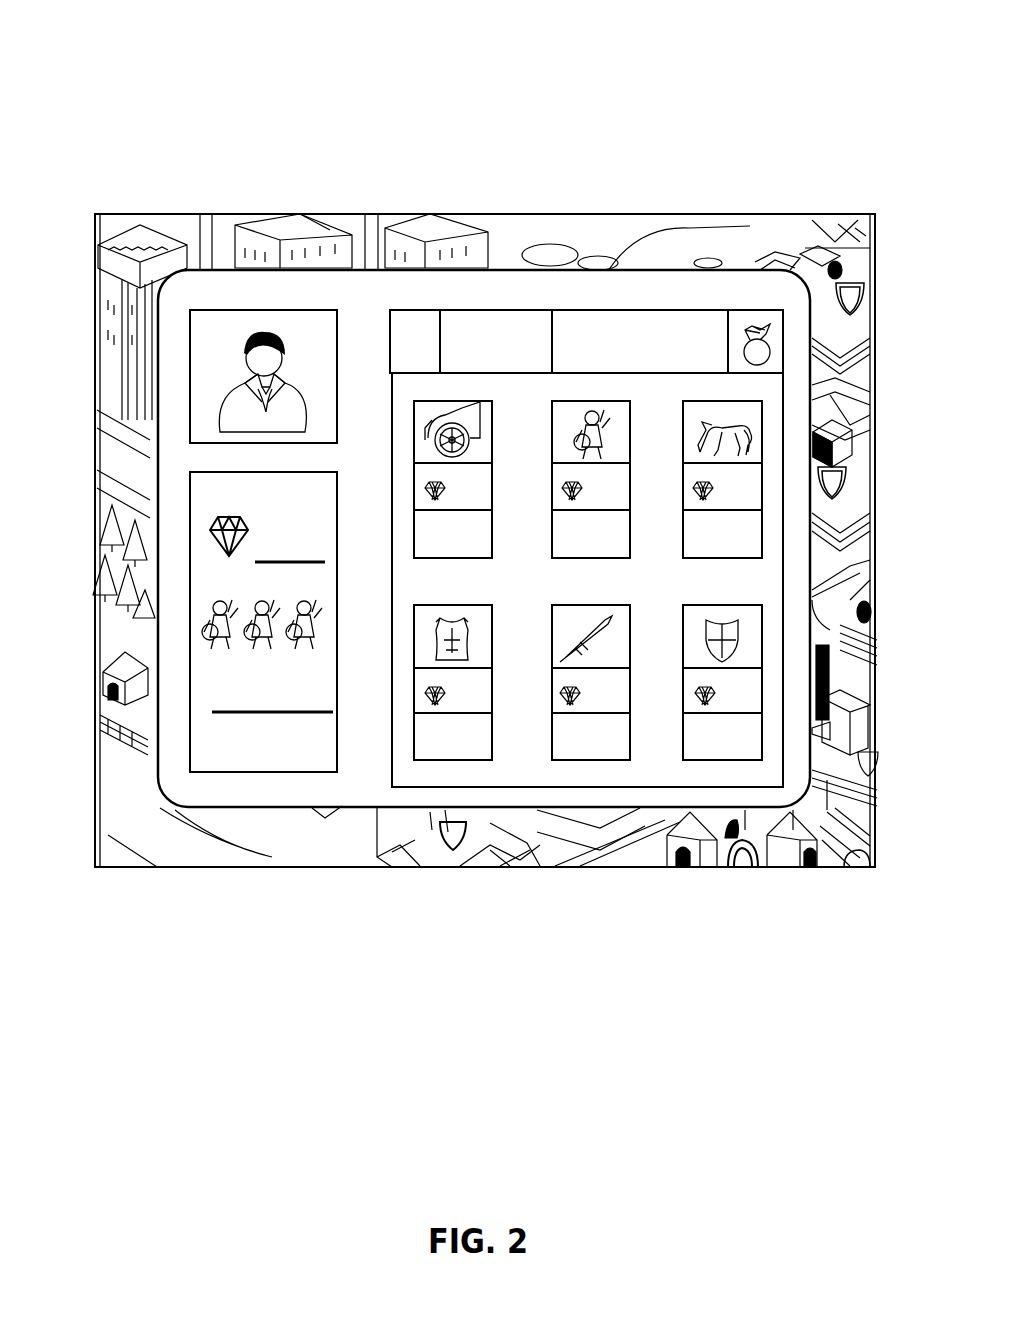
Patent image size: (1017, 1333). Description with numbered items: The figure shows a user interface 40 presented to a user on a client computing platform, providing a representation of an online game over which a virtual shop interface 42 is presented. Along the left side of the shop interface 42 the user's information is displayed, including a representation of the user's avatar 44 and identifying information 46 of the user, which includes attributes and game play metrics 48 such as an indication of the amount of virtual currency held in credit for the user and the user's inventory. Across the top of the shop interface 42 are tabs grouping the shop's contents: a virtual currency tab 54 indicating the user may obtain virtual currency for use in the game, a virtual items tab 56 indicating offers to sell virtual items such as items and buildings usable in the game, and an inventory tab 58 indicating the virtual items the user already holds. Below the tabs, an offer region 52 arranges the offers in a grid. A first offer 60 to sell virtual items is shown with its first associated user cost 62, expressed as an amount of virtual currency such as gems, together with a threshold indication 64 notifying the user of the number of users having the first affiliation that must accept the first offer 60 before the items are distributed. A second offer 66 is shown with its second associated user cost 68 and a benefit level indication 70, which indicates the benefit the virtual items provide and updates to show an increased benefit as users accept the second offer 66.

The user interface 40 is at (113, 104).
The virtual shop interface 42 is at (312, 270).
The avatar 44 is at (212, 344).
The identifying information 46 is at (212, 714).
The game play metrics 48 is at (210, 550).
The item grid 52 is at (785, 385).
The virtual currency tab 54 is at (411, 310).
The virtual items tab 56 is at (525, 310).
The inventory tab 58 is at (753, 308).
The first offer 60 is at (495, 433).
The first associated user cost 62 is at (495, 487).
The threshold indication 64 is at (495, 528).
The second offer 66 is at (632, 433).
The second associated user cost 68 is at (632, 487).
The benefit level indication 70 is at (632, 528).